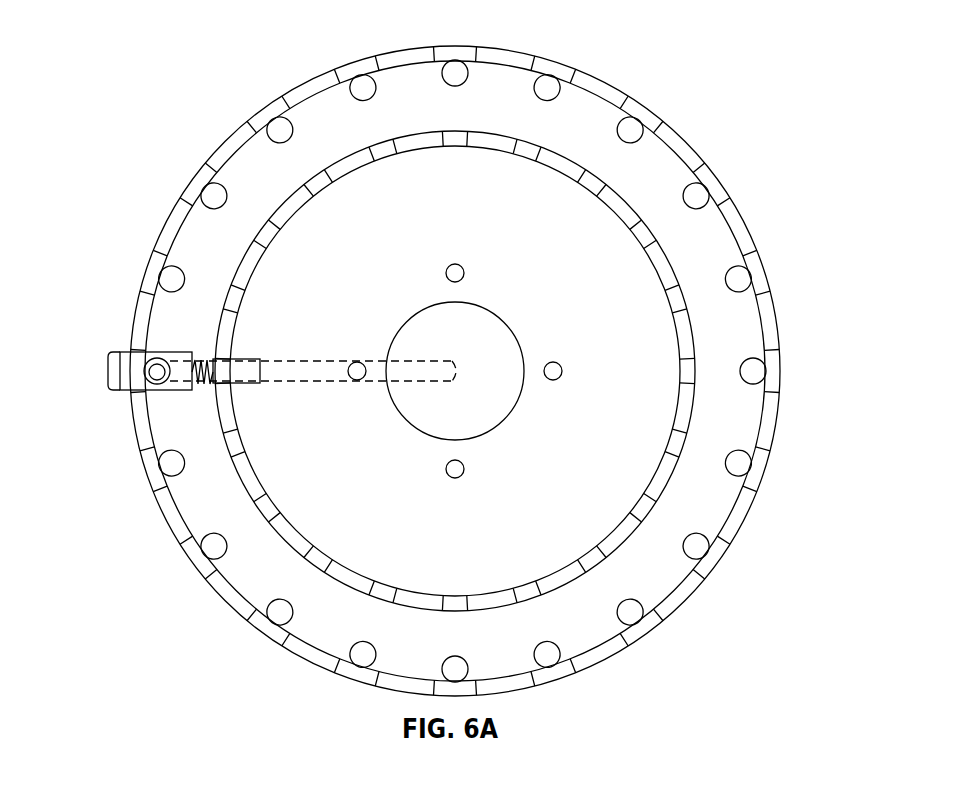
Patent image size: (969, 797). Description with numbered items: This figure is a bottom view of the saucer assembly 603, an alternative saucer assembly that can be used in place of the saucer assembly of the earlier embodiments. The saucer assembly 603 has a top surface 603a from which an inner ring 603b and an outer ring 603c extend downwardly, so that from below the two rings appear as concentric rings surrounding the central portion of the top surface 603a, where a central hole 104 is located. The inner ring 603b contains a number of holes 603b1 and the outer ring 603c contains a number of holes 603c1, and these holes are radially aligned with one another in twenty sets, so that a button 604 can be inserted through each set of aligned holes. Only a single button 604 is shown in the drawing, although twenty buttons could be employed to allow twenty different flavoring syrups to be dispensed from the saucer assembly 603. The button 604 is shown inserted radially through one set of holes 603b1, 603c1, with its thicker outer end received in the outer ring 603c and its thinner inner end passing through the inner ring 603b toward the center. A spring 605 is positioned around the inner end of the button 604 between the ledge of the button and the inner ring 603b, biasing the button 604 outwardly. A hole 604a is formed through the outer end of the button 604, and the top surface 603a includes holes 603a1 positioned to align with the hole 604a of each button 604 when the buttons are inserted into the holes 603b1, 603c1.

The saucer assembly 603 is at (665, 24).
The top surface 603a is at (578, 268).
The holes 603a1 is at (556, 76).
The inner ring 603b is at (695, 392).
The holes 603b1 is at (650, 510).
The outer ring 603c is at (753, 250).
The holes 603c1 is at (764, 272).
The locating hole 104 is at (437, 359).
The button 604 is at (108, 371).
The hole 604a is at (147, 395).
The spring 605 is at (203, 360).